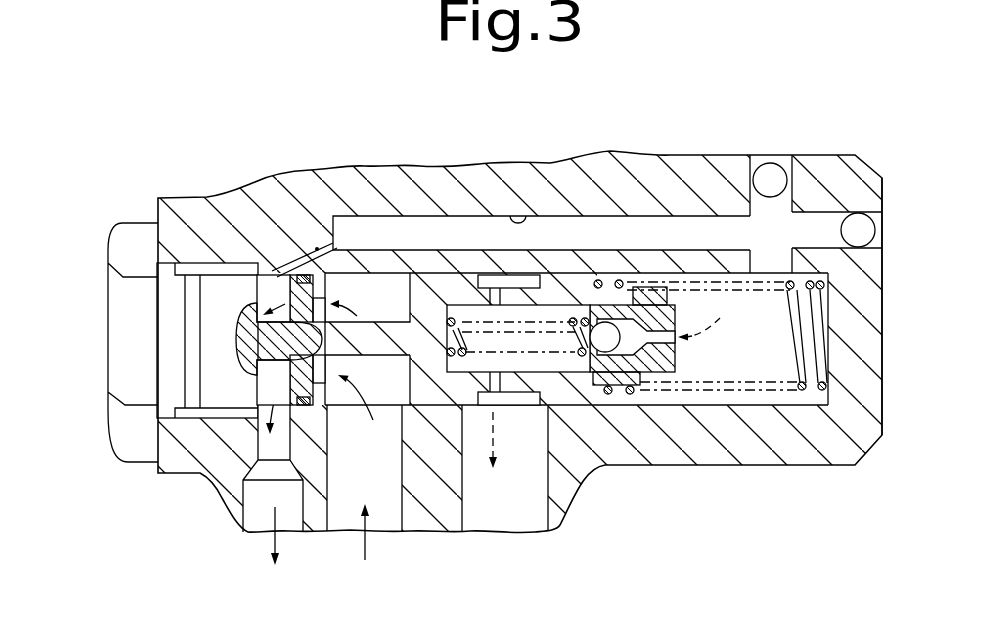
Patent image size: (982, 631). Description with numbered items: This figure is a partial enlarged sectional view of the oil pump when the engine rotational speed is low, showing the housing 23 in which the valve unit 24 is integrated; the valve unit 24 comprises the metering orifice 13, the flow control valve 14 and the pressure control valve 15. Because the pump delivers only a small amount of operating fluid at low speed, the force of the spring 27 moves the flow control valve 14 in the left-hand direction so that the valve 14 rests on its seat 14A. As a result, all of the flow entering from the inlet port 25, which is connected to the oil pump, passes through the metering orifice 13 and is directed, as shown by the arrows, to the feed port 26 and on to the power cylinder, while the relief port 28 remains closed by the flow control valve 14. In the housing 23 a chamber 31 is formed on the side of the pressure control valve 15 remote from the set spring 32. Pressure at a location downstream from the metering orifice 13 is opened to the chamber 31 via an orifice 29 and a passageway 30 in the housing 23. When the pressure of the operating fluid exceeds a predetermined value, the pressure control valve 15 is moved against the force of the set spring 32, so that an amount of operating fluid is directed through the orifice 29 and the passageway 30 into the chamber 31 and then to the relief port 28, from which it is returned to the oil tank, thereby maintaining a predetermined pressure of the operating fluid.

The metering orifice 13 is at (293, 305).
The flow control valve 14 is at (437, 287).
The seat 14A is at (327, 338).
The pressure control valve 15 is at (605, 333).
The housing 23 is at (665, 180).
The valve unit 24 is at (884, 292).
The inlet port 25 is at (400, 497).
The feed port 26 is at (293, 510).
The spring 27 is at (812, 282).
The relief port 28 is at (550, 500).
The orifice 29 is at (309, 248).
The passageway 30 is at (512, 214).
The chamber 31 is at (767, 355).
The spring 32 is at (410, 314).